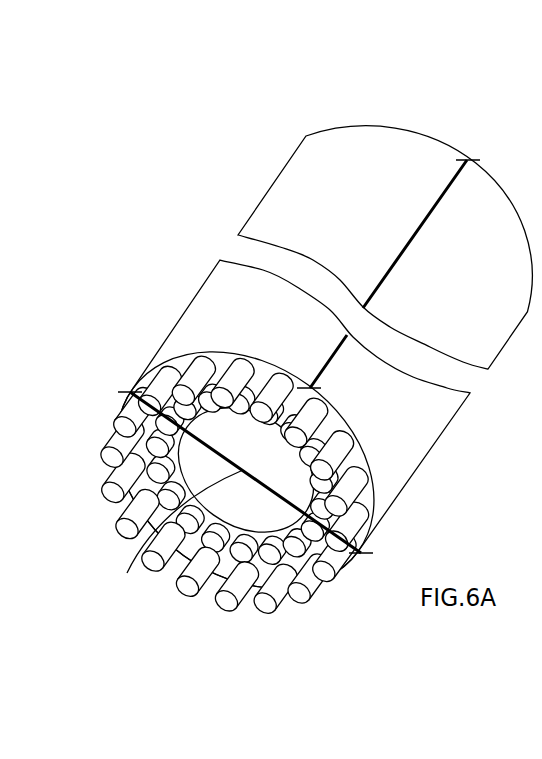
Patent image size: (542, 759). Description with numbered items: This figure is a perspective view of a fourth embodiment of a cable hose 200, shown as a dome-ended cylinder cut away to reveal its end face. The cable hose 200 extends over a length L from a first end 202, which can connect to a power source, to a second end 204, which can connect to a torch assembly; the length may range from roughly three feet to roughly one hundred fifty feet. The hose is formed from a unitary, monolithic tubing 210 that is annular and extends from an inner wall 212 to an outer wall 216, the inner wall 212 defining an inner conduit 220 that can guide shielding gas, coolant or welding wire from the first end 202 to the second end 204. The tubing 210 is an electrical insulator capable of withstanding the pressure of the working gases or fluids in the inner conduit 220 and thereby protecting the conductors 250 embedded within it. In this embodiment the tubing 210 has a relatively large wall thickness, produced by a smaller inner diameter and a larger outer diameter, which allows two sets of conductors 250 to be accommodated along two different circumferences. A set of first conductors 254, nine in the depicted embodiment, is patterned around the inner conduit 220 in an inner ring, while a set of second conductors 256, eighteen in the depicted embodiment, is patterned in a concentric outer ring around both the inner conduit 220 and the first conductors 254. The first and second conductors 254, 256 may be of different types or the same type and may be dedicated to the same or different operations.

The cable hose 200 is at (288, 394).
The first end 202 is at (153, 373).
The second end 204 is at (348, 127).
The tubing 210 is at (301, 356).
The inner wall 212 is at (217, 515).
The outer wall 216 is at (206, 534).
The inner conduit 220 is at (206, 500).
The conductors 250 is at (189, 624).
The first conductors 254 is at (267, 560).
The second conductors 256 is at (225, 603).